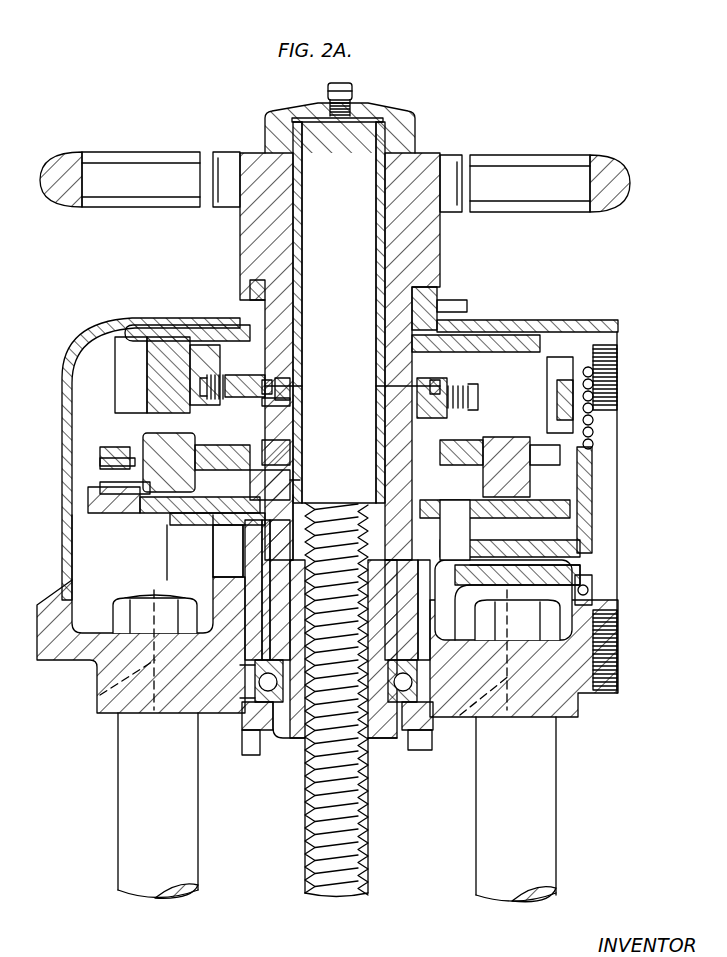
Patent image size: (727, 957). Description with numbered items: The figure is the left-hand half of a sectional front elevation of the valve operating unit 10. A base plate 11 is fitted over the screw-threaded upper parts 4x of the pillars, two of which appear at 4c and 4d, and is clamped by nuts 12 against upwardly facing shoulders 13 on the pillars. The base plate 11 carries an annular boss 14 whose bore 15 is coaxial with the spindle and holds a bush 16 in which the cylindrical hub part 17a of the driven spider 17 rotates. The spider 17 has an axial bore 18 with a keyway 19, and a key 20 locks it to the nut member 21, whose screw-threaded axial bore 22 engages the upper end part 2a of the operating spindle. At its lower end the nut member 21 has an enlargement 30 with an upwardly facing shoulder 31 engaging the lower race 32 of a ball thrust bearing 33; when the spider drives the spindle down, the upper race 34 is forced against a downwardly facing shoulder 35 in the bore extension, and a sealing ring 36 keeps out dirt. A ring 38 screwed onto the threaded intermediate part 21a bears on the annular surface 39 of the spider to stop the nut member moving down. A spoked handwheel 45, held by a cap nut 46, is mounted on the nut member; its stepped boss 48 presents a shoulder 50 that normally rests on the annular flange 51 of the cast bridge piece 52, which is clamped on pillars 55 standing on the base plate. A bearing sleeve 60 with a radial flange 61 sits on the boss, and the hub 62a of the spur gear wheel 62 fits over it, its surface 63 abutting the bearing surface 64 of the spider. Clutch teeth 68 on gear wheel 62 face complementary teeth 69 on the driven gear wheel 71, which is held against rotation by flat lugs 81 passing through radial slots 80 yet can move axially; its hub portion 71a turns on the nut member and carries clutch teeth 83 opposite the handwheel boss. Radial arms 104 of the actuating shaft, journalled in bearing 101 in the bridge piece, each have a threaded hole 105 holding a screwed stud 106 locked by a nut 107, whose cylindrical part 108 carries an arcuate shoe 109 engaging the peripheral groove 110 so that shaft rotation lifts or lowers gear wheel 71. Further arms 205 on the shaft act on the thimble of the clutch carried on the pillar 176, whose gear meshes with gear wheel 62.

The upper end part of the operating spindle 2a is at (352, 865).
The pillar 4c is at (540, 868).
The pillar 4d is at (165, 740).
The screw-threaded upper parts of the pillars 4x is at (100, 697).
The valve operating unit 10 is at (66, 547).
The base plate 11 is at (62, 665).
The nut 12 is at (115, 605).
The upwardly facing shoulder 13 is at (125, 718).
The annular boss 14 is at (252, 604).
The bore 15 is at (268, 582).
The bush 16 is at (263, 622).
The driven spider 17 is at (172, 503).
The cylindrical hub part of the spider 17a is at (265, 545).
The axial bore 18 is at (508, 590).
The keyway 19 is at (268, 468).
The key 20 is at (333, 498).
The nut member 21 is at (292, 466).
The screw-threaded intermediate part of the nut member 21a is at (292, 480).
The screw-threaded axial bore 22 is at (306, 745).
The enlargement 30 is at (380, 738).
The upwardly facing shoulder 31 is at (275, 740).
The lower race 32 is at (258, 750).
The ball thrust bearing 33 is at (262, 705).
The upper race 34 is at (248, 708).
The downwardly facing shoulder 35 is at (280, 643).
The sealing ring 36 is at (252, 762).
The ring 38 is at (240, 338).
The upwardly facing annular surface 39 is at (339, 493).
The spoked handwheel 45 is at (492, 178).
The cap nut 46 is at (408, 115).
The boss of handwheel 48 is at (425, 232).
The downwardly facing shoulder 50 is at (420, 288).
The annular flange 51 is at (442, 305).
The cast bridge piece 52 is at (515, 335).
The pillar 55 is at (175, 583).
The cylindrical bearing sleeve 60 is at (255, 570).
The radial flange 61 is at (250, 592).
The spur gear wheel 62 is at (105, 512).
The hub of the spur gear wheel 62a is at (252, 530).
The upwardly facing surface 63 is at (225, 512).
The downwardly facing bearing surface 64 is at (215, 438).
The clutch teeth 68 is at (112, 492).
The complementary clutch teeth 69 is at (112, 460).
The spur gear wheel 71 is at (112, 447).
The hub portion 71a is at (287, 392).
The radial slot 80 is at (210, 432).
The flat lug 81 is at (150, 445).
The complementary clutch teeth 83 is at (306, 325).
The bearing 101 is at (125, 360).
The radial arm 104 is at (508, 325).
The screw-threaded transverse hole 105 is at (440, 395).
The screwed stud 106 is at (200, 348).
The nut 107 is at (222, 345).
The cylindrical part 108 is at (290, 405).
The arcuate shoe 109 is at (395, 388).
The peripheral groove 110 is at (430, 385).
The pillar 176 is at (627, 584).
The radial arm 205 is at (590, 360).